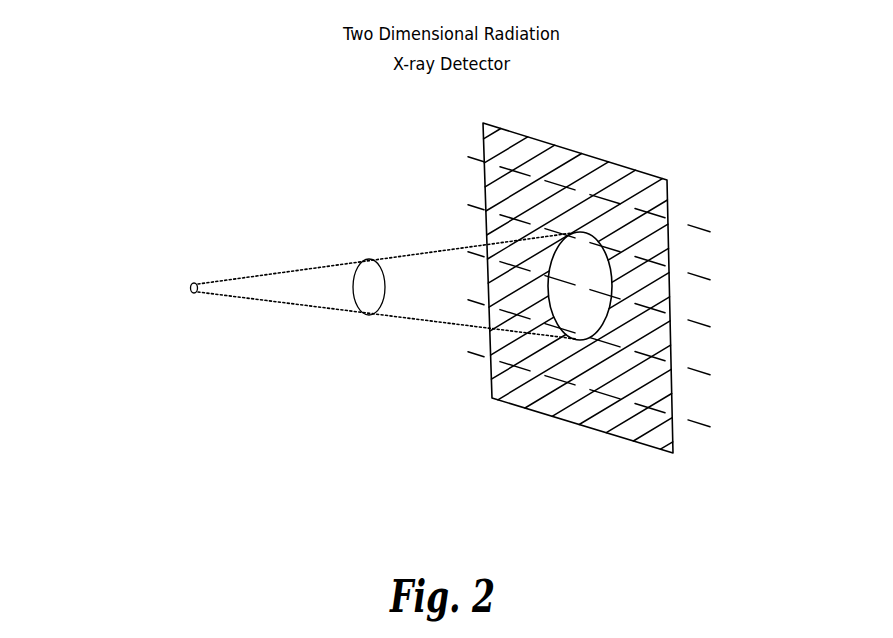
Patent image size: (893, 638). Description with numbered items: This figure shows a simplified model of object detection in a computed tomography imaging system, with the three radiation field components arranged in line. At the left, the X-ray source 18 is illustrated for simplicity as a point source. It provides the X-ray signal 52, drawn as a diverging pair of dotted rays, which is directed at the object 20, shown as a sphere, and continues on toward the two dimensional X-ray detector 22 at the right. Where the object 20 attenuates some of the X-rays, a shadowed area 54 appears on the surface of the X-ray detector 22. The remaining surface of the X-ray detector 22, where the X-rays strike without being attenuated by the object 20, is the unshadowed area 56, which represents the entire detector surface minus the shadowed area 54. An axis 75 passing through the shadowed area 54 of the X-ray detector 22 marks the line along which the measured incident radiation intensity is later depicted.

The X-ray source 18 is at (190, 276).
The object 20 is at (372, 274).
The X-ray detector 22 is at (479, 147).
The X-ray signal 52 is at (289, 344).
The shadowed area 54 is at (611, 256).
The unshadowed area 56 is at (581, 418).
The axis 75 is at (694, 320).